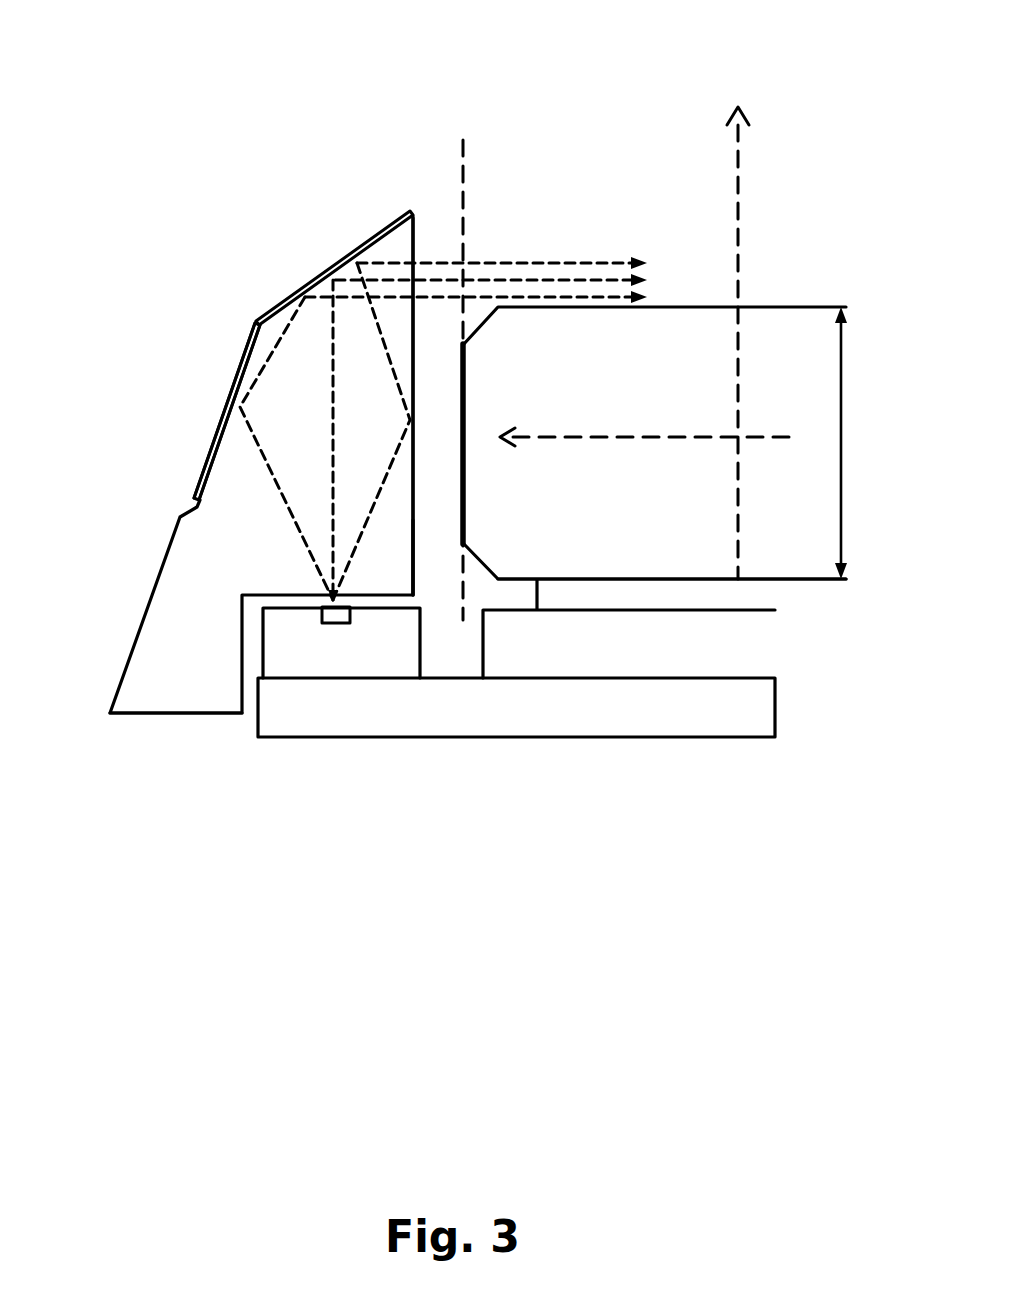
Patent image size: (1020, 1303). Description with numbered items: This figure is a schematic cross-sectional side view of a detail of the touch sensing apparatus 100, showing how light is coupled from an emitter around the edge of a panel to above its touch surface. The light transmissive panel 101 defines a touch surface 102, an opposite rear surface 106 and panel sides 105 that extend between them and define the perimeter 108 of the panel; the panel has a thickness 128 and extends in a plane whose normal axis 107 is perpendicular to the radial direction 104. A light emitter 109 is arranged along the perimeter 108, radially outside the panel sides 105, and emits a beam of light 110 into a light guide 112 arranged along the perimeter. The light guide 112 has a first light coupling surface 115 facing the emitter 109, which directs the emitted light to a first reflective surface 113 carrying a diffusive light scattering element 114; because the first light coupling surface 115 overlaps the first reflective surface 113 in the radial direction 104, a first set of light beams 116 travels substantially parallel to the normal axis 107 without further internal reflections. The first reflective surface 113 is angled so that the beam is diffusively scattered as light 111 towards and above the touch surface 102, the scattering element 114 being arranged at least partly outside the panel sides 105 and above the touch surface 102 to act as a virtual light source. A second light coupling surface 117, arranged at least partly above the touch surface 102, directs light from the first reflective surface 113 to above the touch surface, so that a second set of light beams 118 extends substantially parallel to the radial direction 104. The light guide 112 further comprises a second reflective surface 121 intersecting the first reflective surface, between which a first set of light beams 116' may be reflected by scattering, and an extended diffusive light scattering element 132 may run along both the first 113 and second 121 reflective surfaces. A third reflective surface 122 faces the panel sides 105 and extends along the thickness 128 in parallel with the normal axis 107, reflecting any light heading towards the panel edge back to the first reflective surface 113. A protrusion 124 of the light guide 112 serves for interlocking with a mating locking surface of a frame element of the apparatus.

The touch sensing apparatus 100 is at (143, 70).
The light transmissive panel 101 is at (620, 557).
The touch surface 102 is at (755, 303).
The radial direction 104 is at (583, 438).
The panel sides 105 is at (465, 508).
The rear surface 106 is at (782, 579).
The normal axis 107 is at (738, 188).
The perimeter 108 is at (463, 148).
The light emitter 109 is at (333, 624).
The beam of light 110 is at (305, 496).
The scattered light 111 is at (610, 250).
The light guide 112 is at (150, 652).
The first reflective surface 113 is at (287, 303).
The diffusive light scattering element 114 is at (373, 240).
The first light coupling surface 115 is at (278, 595).
The first set of light beams 116 is at (189, 459).
The first set of light beams 116' is at (200, 447).
The second light coupling surface 117 is at (413, 243).
The second set of light beams 118 is at (553, 263).
The second reflective surface 121 is at (224, 425).
The third reflective surface 122 is at (415, 533).
The protrusion 124 is at (171, 692).
The thickness 128 is at (863, 443).
The extended diffusive light scattering element 132 is at (197, 480).